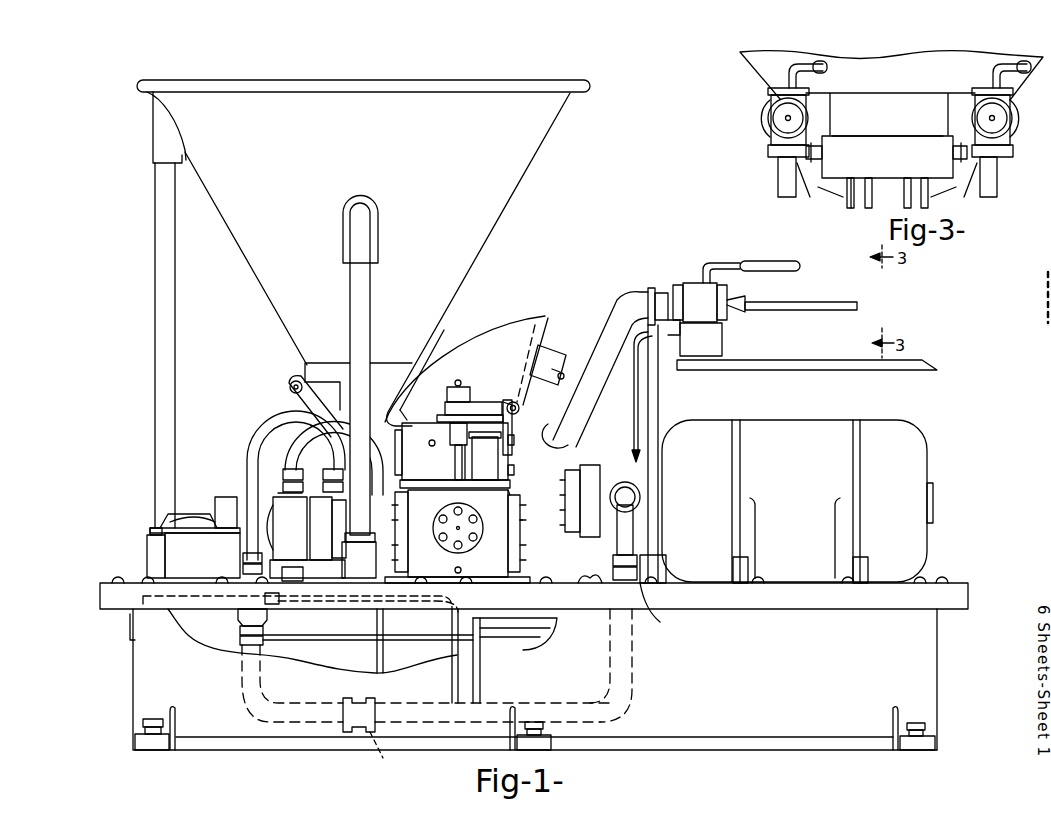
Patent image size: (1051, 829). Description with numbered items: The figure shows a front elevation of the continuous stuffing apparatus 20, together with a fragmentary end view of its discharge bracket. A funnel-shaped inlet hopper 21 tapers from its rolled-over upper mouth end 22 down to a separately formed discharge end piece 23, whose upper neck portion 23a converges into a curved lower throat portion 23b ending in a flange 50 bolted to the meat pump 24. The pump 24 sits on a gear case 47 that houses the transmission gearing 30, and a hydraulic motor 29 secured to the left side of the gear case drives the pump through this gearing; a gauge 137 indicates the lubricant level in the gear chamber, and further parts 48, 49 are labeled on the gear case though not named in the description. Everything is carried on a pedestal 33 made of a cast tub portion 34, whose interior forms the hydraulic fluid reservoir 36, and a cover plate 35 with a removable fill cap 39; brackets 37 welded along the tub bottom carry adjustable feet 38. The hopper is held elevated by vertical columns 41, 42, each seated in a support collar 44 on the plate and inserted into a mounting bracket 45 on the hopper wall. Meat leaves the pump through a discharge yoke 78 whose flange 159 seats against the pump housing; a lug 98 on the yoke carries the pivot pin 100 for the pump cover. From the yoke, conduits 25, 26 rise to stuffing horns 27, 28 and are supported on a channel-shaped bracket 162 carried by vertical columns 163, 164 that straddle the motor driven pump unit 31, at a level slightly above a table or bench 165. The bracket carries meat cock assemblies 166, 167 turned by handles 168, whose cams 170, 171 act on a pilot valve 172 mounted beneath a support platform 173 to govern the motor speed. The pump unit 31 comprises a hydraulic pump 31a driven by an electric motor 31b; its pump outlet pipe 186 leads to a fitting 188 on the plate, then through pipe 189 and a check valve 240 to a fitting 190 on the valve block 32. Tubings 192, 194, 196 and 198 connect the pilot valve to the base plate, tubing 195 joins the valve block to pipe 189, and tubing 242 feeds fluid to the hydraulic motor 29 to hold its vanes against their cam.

In FIG. 1, the continuous stuffing apparatus 20 is at (108, 162).
In FIG. 1, the inlet hopper 21 is at (363, 236).
In FIG. 1, the upper mouth end 22 is at (517, 80).
In FIG. 1, the discharge end piece 23 is at (332, 378).
In FIG. 1, the upper neck portion 23a is at (381, 362).
In FIG. 1, the lower throat portion 23b is at (428, 360).
In FIG. 1, the meat pump 24 is at (435, 420).
In FIG. 3, the conduit 25 is at (936, 194).
In FIG. 1, the conduit 26 is at (614, 313).
In FIG. 3, the conduit 26 is at (822, 190).
In FIG. 3, the stuffing horn 27 is at (1014, 100).
In FIG. 1, the stuffing horn 28 is at (792, 306).
In FIG. 3, the stuffing horn 28 is at (790, 116).
In FIG. 1, the hydraulic motor 29 is at (290, 504).
In FIG. 1, the transmission gearing 30 is at (508, 488).
In FIG. 1, the motor driven pump unit 31 is at (641, 457).
In FIG. 1, the hydraulic pump 31a is at (622, 458).
In FIG. 1, the electric motor 31b is at (798, 428).
In FIG. 1, the valve block 32 is at (178, 537).
In FIG. 1, the support base or pedestal 33 is at (133, 665).
In FIG. 1, the tub portion 34 is at (925, 660).
In FIG. 1, the cover plate 35 is at (112, 594).
In FIG. 1, the reservoir 36 is at (323, 660).
In FIG. 1, the bracket 37 is at (178, 722).
In FIG. 1, the foot 38 is at (152, 716).
In FIG. 1, the removable cap 39 is at (580, 578).
In FIG. 1, the vertical column 41 is at (155, 278).
In FIG. 1, the vertical column 42 is at (370, 302).
In FIG. 1, the support collar 44 is at (148, 546).
In FIG. 1, the mounting bracket 45 is at (372, 236).
In FIG. 1, the gear case 47 is at (496, 537).
In FIG. 1, the flange 48 is at (470, 540).
In FIG. 1, the housing side plate 49 is at (522, 527).
In FIG. 1, the flange 50 is at (404, 464).
In FIG. 1, the discharge yoke 78 is at (545, 425).
In FIG. 1, the lug 98 is at (514, 432).
In FIG. 1, the pivot pin 100 is at (508, 404).
In FIG. 1, the gauge 137 is at (488, 474).
In FIG. 1, the flange 159 is at (506, 468).
In FIG. 1, the channel-shaped bracket 162 is at (652, 288).
In FIG. 3, the channel-shaped bracket 162 is at (855, 108).
In FIG. 3, the vertical column 163 is at (992, 187).
In FIG. 1, the vertical column 164 is at (658, 396).
In FIG. 3, the vertical column 164 is at (787, 186).
In FIG. 1, the table or bench 165 is at (893, 368).
In FIG. 3, the meat cock assembly 166 is at (1012, 122).
In FIG. 3, the meat cock assembly 167 is at (765, 126).
In FIG. 3, the handle 168 is at (818, 64).
In FIG. 3, the cam 170 is at (997, 157).
In FIG. 3, the cam 171 is at (782, 156).
In FIG. 1, the pilot valve 172 is at (720, 344).
In FIG. 3, the support platform 173 is at (868, 136).
In FIG. 1, the pump outlet pipe 186 is at (616, 546).
In FIG. 1, the fitting 188 is at (668, 609).
In FIG. 1, the pipe 189 is at (635, 680).
In FIG. 1, the fitting 190 is at (265, 616).
In FIG. 1, the small tubing 192 is at (637, 386).
In FIG. 3, the small tubing 192 is at (847, 204).
In FIG. 3, the tubing 194 is at (858, 183).
In FIG. 1, the tubing 195 is at (495, 622).
In FIG. 3, the tubing 196 is at (945, 168).
In FIG. 3, the tubing 198 is at (908, 182).
In FIG. 1, the check valve 240 is at (360, 735).
In FIG. 1, the tubing 242 is at (455, 693).